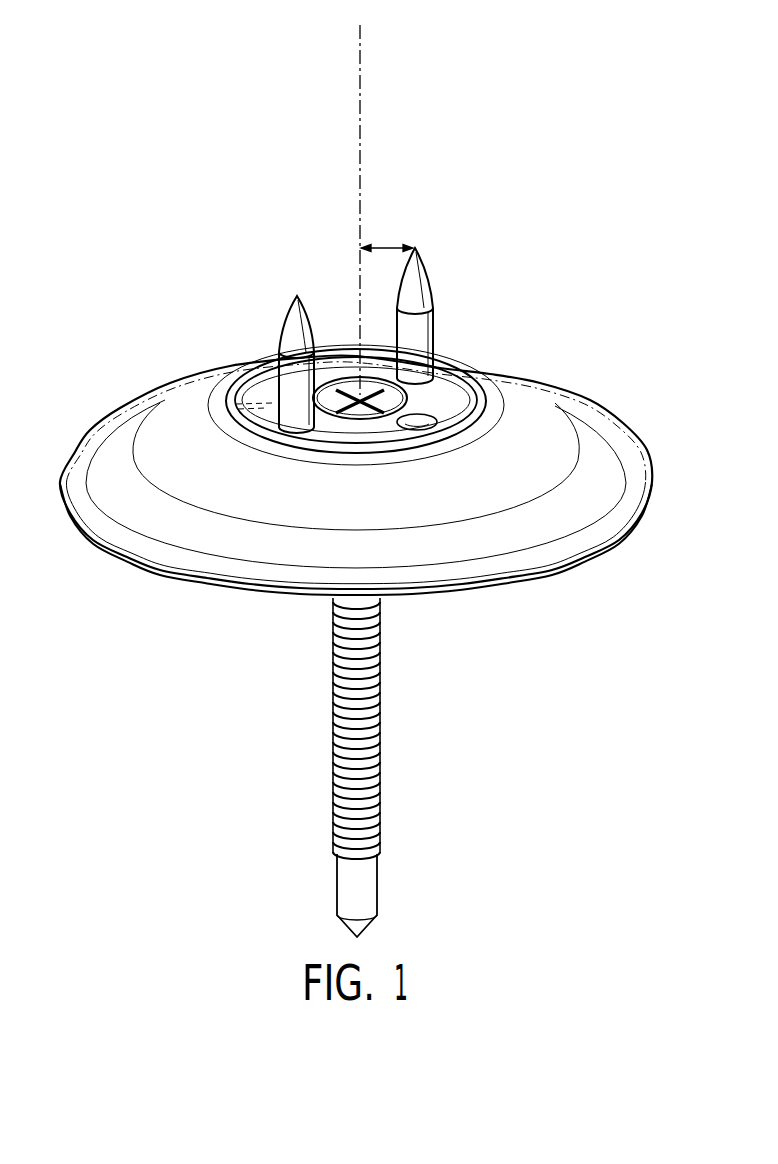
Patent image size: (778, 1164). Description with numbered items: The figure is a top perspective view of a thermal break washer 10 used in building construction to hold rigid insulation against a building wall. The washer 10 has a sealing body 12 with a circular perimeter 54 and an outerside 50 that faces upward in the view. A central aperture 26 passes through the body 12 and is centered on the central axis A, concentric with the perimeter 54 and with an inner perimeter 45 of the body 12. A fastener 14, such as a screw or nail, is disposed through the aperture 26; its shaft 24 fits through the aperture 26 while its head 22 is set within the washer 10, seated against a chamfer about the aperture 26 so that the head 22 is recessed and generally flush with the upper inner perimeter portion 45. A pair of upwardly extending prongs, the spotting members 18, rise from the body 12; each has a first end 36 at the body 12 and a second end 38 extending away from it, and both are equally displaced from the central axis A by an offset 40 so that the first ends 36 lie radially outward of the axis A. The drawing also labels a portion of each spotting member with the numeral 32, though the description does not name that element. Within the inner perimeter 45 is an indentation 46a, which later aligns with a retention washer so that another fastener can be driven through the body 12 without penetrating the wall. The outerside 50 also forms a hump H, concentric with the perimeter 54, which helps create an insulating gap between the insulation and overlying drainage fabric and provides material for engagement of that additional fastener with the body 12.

The thermal break washer 10 is at (631, 105).
The sealing body 12 is at (120, 430).
The fastener 14 is at (362, 887).
The spotting members 18 is at (293, 330).
The head 22 is at (333, 387).
The shaft 24 is at (384, 722).
The central aperture 26 is at (437, 362).
The pin cylindrical body 32 is at (298, 385).
The first end 36 is at (290, 415).
The second end 38 is at (296, 297).
The offset 40 is at (384, 247).
The inner perimeter 45 is at (474, 408).
The indentation 46a is at (440, 422).
The outerside 50 is at (594, 455).
The circular perimeter 54 is at (650, 517).
The central axis A is at (361, 130).
The hump H is at (230, 410).